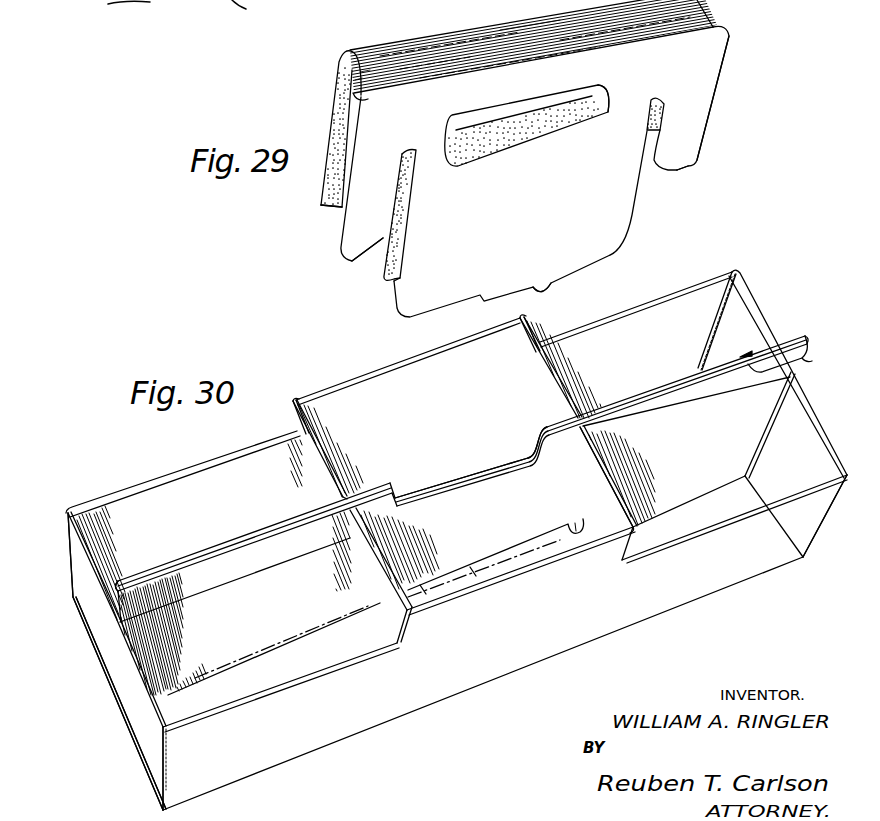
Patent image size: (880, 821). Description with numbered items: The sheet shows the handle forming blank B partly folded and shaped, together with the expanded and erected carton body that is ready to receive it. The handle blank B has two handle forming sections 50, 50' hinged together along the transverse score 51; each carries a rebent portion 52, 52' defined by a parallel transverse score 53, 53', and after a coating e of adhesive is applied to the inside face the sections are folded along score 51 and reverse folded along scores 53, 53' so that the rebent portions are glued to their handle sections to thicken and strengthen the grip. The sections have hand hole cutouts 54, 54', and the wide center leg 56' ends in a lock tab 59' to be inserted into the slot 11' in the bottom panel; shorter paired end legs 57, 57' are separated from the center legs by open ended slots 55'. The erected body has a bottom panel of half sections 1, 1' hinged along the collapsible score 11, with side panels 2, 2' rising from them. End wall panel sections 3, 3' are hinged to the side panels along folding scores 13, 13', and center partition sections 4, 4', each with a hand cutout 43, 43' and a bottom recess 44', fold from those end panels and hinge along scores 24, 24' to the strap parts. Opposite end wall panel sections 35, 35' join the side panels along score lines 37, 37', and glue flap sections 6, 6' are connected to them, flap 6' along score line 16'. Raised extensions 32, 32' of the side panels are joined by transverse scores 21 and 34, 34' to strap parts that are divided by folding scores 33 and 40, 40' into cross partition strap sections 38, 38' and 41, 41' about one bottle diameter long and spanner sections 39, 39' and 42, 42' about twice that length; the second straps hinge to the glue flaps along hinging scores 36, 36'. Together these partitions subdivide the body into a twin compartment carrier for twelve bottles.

In FIG. 29, the handle forming blank B is at (733, 52).
In FIG. 29, the handle forming section 50 is at (323, 129).
In FIG. 29, the handle forming section 50' is at (737, 98).
In FIG. 29, the transverse score 51 is at (350, 96).
In FIG. 29, the rebent portion 52 is at (375, 43).
In FIG. 29, the rebent portion 52' is at (347, 47).
In FIG. 29, the transverse score 53 is at (533, 46).
In FIG. 29, the transverse score 53' is at (530, 31).
In FIG. 29, the hand hole cutout 54 is at (527, 121).
In FIG. 29, the hand hole cutout 54' is at (629, 89).
In FIG. 29, the open ended slot 55' is at (542, 183).
In FIG. 29, the center leg 56' is at (641, 219).
In FIG. 29, the end leg 57 is at (316, 217).
In FIG. 29, the end leg 57' is at (525, 200).
In FIG. 29, the lock tab 59' is at (564, 281).
In FIG. 29, the coating of adhesive e is at (334, 181).
In FIG. 30, the bottom half section 1 is at (228, 703).
In FIG. 30, the bottom half section 1' is at (180, 703).
In FIG. 30, the side panel 2 is at (399, 394).
In FIG. 30, the side panel 2' is at (483, 683).
In FIG. 30, the end wall panel section 3 is at (72, 590).
In FIG. 30, the end wall panel section 3' is at (118, 703).
In FIG. 30, the center partition section 4 is at (428, 456).
In FIG. 30, the center partition section 4' is at (515, 494).
In FIG. 30, the glue flap section 6 is at (763, 333).
In FIG. 30, the glue flap section 6' is at (817, 362).
In FIG. 30, the collapsible score 11 is at (385, 613).
In FIG. 30, the slot 11' is at (467, 566).
In FIG. 30, the folding score 13 is at (116, 641).
In FIG. 30, the folding score 13' is at (135, 768).
In FIG. 30, the score line 16' is at (768, 425).
In FIG. 30, the transverse score 21 is at (292, 402).
In FIG. 30, the hinging score 24 is at (72, 591).
In FIG. 30, the hinging score 24' is at (101, 667).
In FIG. 30, the raised extension 32 is at (382, 356).
In FIG. 30, the raised extension 32' is at (517, 587).
In FIG. 30, the folding score 33 is at (338, 497).
In FIG. 30, the transverse score 34 is at (505, 330).
In FIG. 30, the transverse score 34' is at (625, 481).
In FIG. 30, the end wall panel section 35 is at (744, 321).
In FIG. 30, the end wall panel section 35' is at (797, 472).
In FIG. 30, the hinging score 36 is at (785, 329).
In FIG. 30, the hinging score 36' is at (826, 339).
In FIG. 30, the score line 37 is at (788, 372).
In FIG. 30, the score line 37' is at (820, 514).
In FIG. 30, the cross partition strap section 38 is at (325, 448).
In FIG. 30, the cross partition strap section 38' is at (386, 575).
In FIG. 30, the spanner section 39 is at (254, 537).
In FIG. 30, the spanner section 39' is at (234, 580).
In FIG. 30, the folding score 40 is at (597, 387).
In FIG. 30, the folding score 40' is at (631, 437).
In FIG. 30, the cross partition section 41 is at (551, 364).
In FIG. 30, the cross partition section 41' is at (662, 477).
In FIG. 30, the spanner section 42 is at (677, 385).
In FIG. 30, the spanner section 42' is at (686, 408).
In FIG. 30, the hand cutout 43 is at (461, 466).
In FIG. 30, the hand cutout 43' is at (517, 460).
In FIG. 30, the recess 44' is at (496, 548).